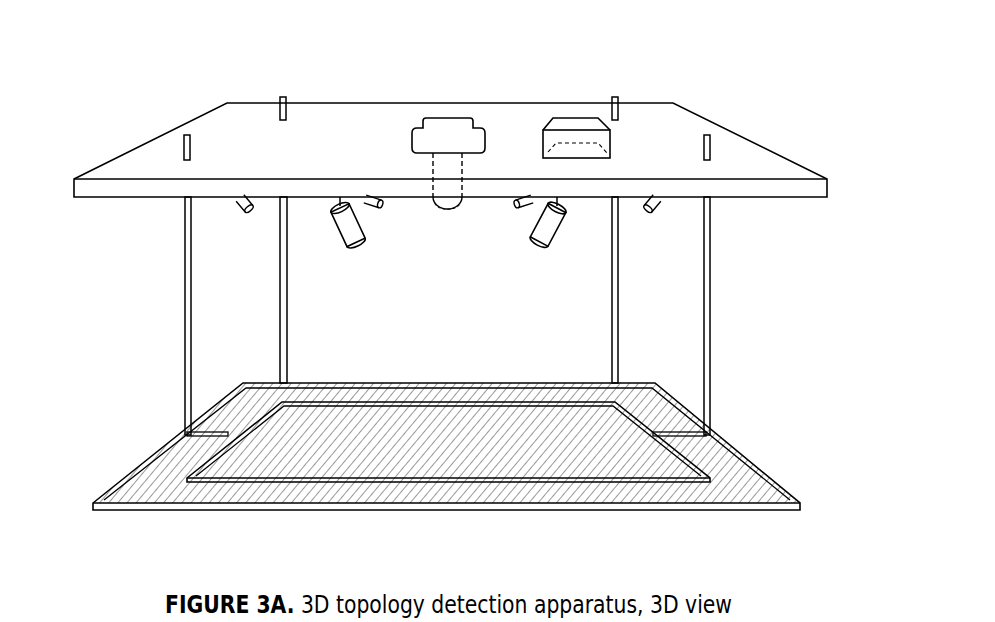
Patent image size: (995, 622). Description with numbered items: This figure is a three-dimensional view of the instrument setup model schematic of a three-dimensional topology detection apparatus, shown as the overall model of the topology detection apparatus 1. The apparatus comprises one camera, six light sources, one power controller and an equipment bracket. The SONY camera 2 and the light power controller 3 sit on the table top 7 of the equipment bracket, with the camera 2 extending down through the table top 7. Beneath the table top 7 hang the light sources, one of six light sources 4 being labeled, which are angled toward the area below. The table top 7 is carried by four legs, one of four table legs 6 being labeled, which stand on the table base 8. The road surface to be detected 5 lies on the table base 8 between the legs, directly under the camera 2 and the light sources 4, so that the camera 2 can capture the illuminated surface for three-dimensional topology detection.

The overall model of the 3D topology detection apparatus 1 is at (160, 110).
The SONY DSC HX-300 camera 2 is at (445, 130).
The light power controller 3 is at (577, 125).
The light source 4 is at (348, 233).
The road surface to be detected 5 is at (465, 430).
The table leg 6 is at (712, 148).
The table top 7 is at (737, 188).
The table base 8 is at (775, 472).